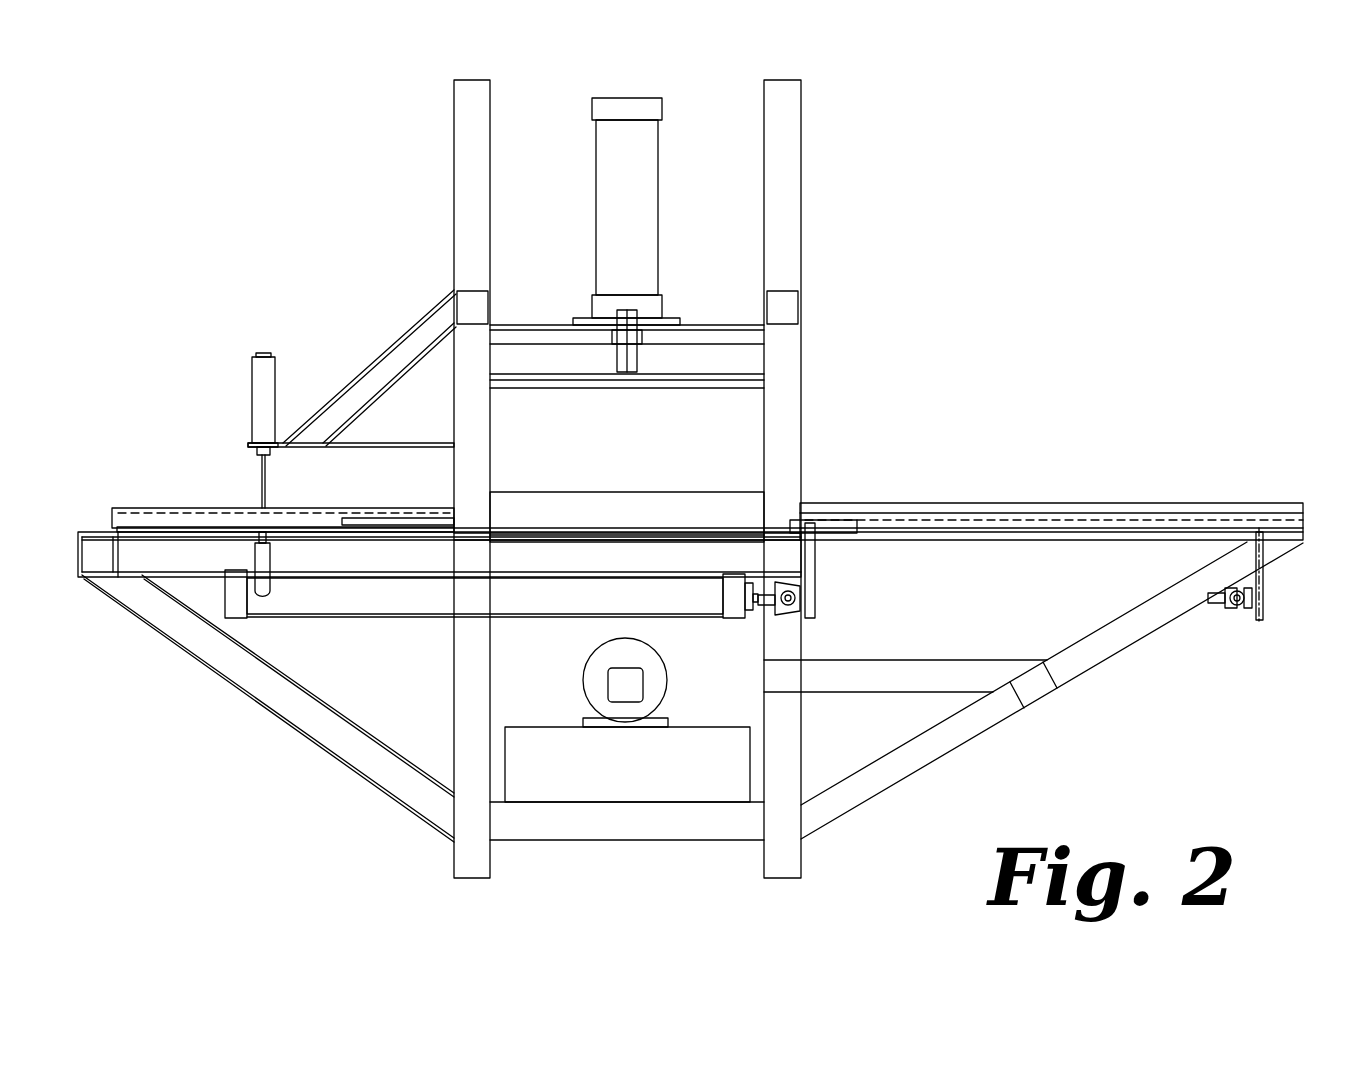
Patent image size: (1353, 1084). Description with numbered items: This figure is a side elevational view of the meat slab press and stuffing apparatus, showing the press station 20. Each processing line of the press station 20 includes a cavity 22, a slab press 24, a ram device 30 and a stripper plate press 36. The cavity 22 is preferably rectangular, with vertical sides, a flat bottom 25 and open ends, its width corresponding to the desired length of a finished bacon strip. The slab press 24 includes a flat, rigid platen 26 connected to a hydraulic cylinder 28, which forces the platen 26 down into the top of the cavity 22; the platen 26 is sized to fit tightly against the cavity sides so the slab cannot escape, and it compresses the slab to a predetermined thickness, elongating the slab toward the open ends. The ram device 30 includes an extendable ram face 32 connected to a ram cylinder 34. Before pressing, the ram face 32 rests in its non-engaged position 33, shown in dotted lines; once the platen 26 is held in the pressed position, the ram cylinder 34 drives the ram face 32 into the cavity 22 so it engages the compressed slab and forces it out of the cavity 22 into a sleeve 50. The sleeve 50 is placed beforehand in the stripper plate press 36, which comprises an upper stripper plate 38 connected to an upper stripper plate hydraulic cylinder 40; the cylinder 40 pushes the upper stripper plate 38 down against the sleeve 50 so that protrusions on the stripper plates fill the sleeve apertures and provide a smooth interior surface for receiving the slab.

The press station 20 is at (844, 157).
The cavity 22 is at (742, 490).
The slab press 24 is at (700, 290).
The flat bottom 25 is at (548, 527).
The flat platen 26 is at (713, 392).
The hydraulic cylinder 28 is at (658, 217).
The ram device 30 is at (718, 638).
The ram face 32 is at (860, 528).
The non-engaged position 33 is at (1265, 596).
The ram cylinder 34 is at (358, 617).
The stripper plate press 36 is at (207, 425).
The upper stripper plate 38 is at (136, 507).
The upper stripper plate hydraulic cylinder 40 is at (275, 377).
The sleeve 50 is at (200, 523).